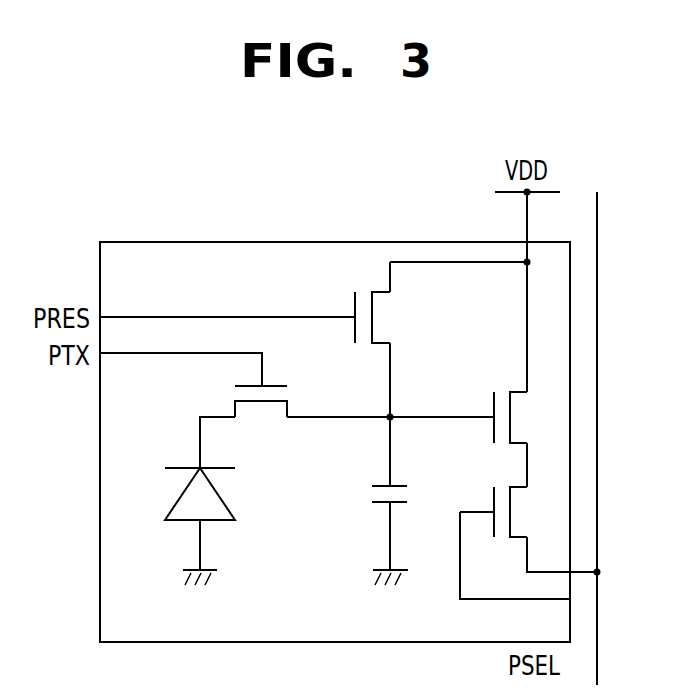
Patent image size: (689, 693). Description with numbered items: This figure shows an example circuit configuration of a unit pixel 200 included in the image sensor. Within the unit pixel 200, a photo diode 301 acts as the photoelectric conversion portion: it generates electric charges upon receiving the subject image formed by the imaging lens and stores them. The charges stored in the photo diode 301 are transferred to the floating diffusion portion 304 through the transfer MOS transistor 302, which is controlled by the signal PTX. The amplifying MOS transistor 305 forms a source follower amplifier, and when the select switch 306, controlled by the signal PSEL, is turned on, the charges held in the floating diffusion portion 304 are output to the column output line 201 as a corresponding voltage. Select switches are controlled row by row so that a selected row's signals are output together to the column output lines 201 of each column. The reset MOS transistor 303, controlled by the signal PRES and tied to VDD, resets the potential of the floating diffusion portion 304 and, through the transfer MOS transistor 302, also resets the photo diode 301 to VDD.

The unit pixel 200 is at (238, 242).
The column output line 201 is at (599, 283).
The photo diode 301 is at (180, 523).
The transfer MOS transistor 302 is at (244, 387).
The reset MOS transistor 303 is at (388, 322).
The floating diffusion portion 304 is at (383, 505).
The amplifying MOS transistor 305 is at (490, 396).
The select switch 306 is at (490, 491).